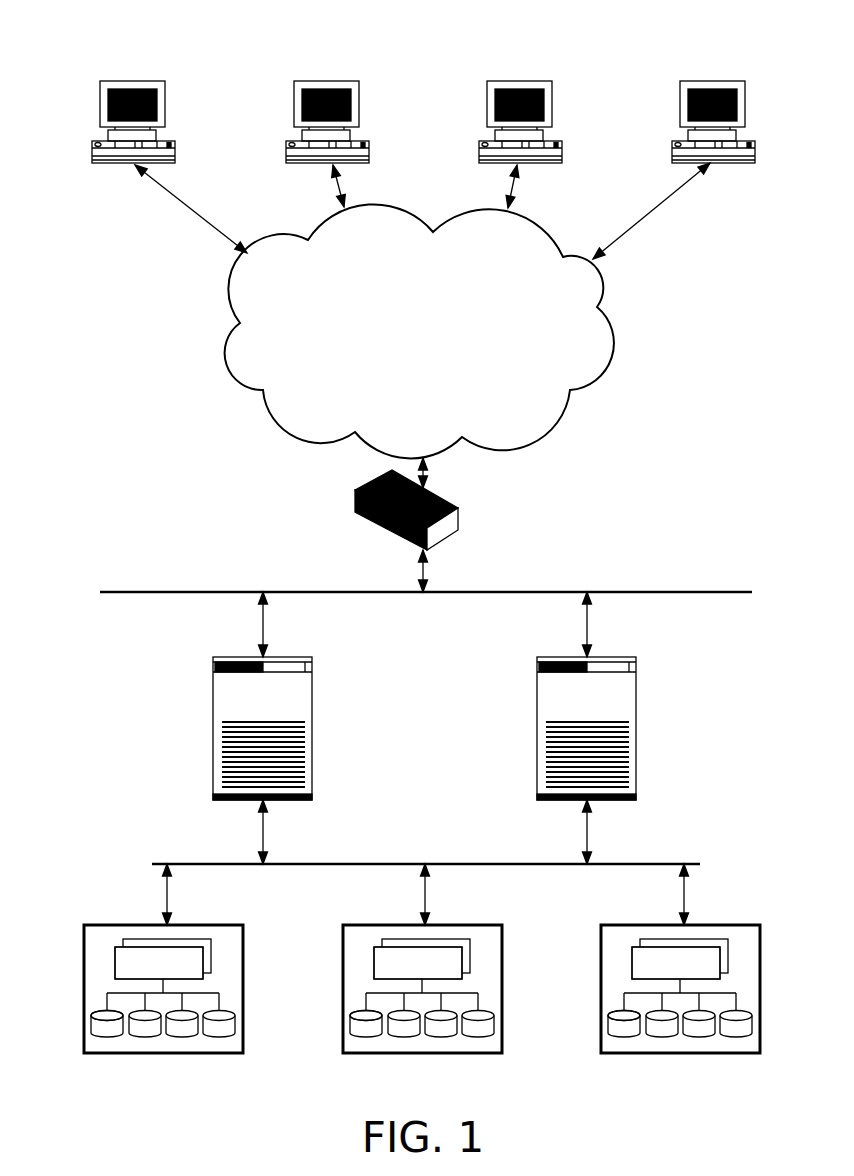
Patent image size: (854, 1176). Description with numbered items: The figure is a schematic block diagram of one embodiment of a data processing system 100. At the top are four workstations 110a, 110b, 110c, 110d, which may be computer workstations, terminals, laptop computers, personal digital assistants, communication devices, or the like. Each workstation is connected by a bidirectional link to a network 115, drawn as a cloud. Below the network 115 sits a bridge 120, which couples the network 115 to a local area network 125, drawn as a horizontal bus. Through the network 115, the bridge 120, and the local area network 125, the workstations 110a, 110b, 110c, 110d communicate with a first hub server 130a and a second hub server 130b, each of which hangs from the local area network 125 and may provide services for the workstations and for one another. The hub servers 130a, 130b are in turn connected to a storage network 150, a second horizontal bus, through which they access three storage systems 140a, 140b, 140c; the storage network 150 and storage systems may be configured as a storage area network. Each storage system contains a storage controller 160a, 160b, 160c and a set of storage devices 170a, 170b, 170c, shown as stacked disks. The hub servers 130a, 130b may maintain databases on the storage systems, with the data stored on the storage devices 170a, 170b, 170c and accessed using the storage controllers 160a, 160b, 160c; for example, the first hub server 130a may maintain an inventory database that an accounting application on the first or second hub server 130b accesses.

The data processing system 100 is at (98, 58).
The workstation 110a is at (165, 82).
The workstation 110b is at (359, 82).
The workstation 110c is at (552, 82).
The workstation 110d is at (746, 82).
The network 115 is at (399, 355).
The bridge 120 is at (460, 507).
The local area network 125 is at (120, 590).
The first hub server 130a is at (312, 657).
The second hub server 130b is at (636, 657).
The storage network 150 is at (358, 862).
The storage system 140a is at (243, 925).
The storage system 140b is at (502, 925).
The storage system 140c is at (760, 925).
The storage controller 160a is at (115, 961).
The storage controller 160b is at (374, 961).
The storage controller 160c is at (632, 961).
The storage device 170a is at (92, 1024).
The storage device 170b is at (351, 1024).
The storage device 170c is at (609, 1024).